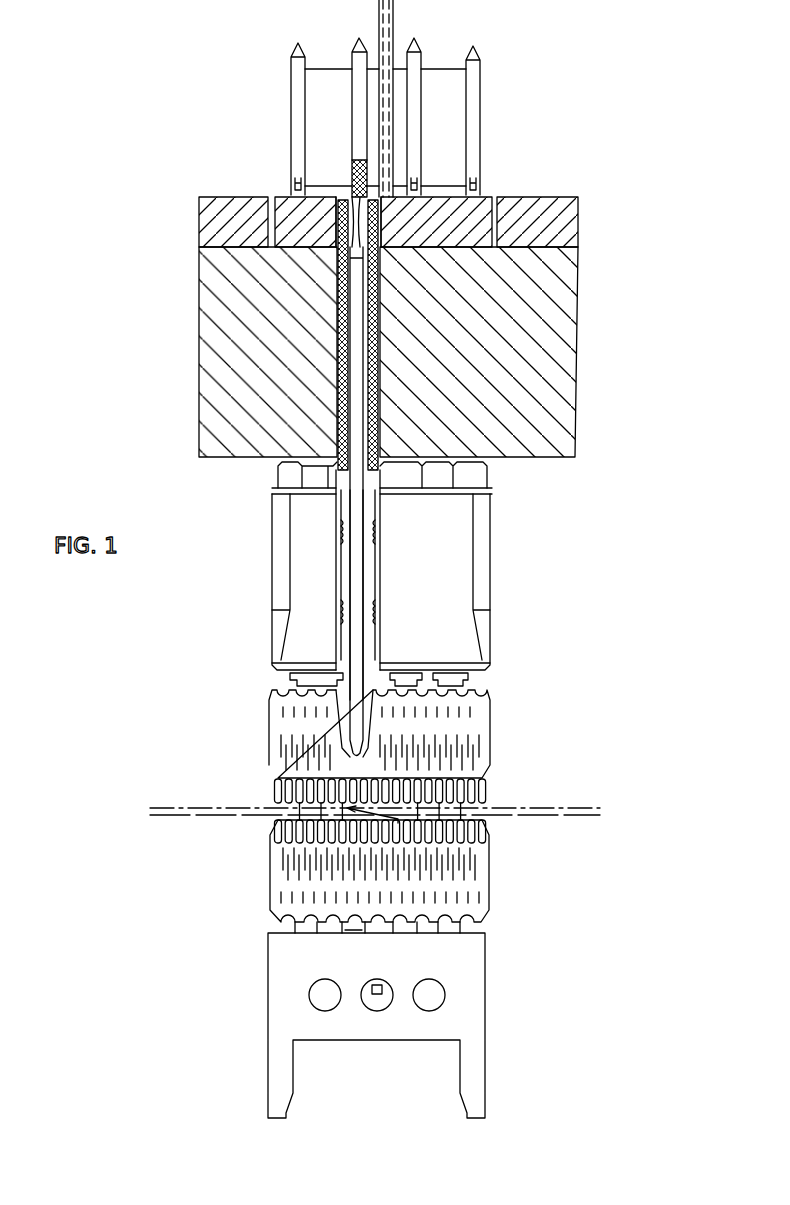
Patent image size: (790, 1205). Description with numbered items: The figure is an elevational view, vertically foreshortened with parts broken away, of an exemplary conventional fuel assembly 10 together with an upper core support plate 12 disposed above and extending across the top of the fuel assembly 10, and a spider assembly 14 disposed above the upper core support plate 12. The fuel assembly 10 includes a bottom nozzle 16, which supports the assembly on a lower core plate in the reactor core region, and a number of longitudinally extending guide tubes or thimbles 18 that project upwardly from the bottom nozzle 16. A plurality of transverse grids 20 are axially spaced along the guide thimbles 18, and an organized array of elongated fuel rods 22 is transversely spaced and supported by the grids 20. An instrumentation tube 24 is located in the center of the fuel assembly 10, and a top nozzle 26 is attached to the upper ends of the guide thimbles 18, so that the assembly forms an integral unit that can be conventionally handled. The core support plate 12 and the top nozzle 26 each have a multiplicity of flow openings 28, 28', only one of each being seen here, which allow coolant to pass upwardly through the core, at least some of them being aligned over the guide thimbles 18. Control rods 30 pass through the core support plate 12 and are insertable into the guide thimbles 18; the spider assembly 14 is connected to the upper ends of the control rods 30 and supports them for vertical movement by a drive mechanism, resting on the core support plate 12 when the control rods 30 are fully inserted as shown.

The fuel assembly 10 is at (572, 593).
The upper core support plate 12 is at (563, 423).
The spider assembly 14 is at (504, 130).
The bottom nozzle 16 is at (470, 982).
The guide thimbles 18 is at (290, 688).
The transverse grids 20 is at (485, 727).
The fuel rods 22 is at (483, 828).
The instrumentation tube 24 is at (378, 996).
The top nozzle 26 is at (453, 550).
The flow openings 28 is at (496, 476).
The flow openings 28' is at (395, 595).
The control rods 30 is at (374, 304).